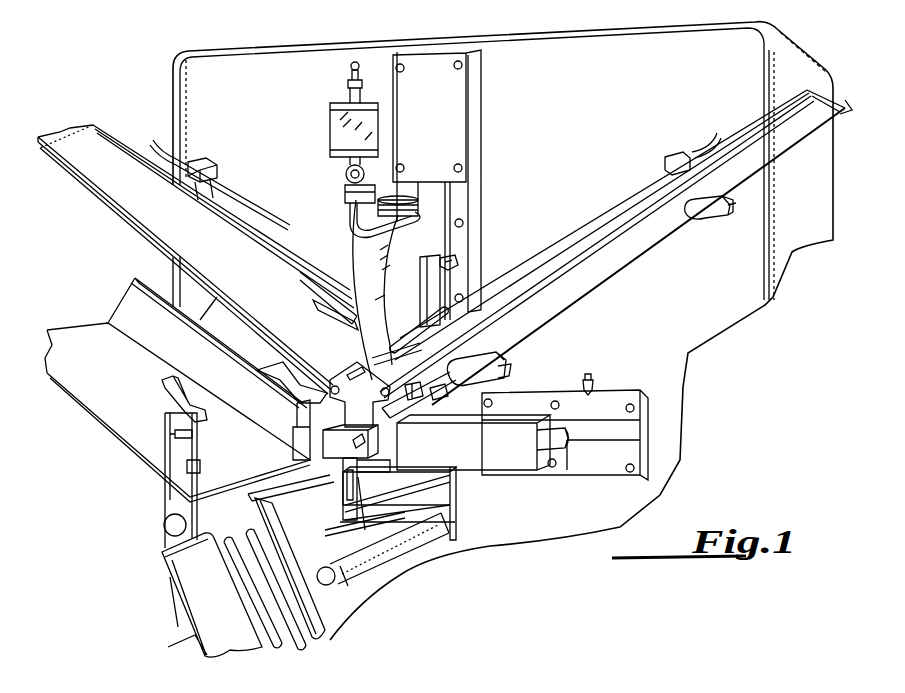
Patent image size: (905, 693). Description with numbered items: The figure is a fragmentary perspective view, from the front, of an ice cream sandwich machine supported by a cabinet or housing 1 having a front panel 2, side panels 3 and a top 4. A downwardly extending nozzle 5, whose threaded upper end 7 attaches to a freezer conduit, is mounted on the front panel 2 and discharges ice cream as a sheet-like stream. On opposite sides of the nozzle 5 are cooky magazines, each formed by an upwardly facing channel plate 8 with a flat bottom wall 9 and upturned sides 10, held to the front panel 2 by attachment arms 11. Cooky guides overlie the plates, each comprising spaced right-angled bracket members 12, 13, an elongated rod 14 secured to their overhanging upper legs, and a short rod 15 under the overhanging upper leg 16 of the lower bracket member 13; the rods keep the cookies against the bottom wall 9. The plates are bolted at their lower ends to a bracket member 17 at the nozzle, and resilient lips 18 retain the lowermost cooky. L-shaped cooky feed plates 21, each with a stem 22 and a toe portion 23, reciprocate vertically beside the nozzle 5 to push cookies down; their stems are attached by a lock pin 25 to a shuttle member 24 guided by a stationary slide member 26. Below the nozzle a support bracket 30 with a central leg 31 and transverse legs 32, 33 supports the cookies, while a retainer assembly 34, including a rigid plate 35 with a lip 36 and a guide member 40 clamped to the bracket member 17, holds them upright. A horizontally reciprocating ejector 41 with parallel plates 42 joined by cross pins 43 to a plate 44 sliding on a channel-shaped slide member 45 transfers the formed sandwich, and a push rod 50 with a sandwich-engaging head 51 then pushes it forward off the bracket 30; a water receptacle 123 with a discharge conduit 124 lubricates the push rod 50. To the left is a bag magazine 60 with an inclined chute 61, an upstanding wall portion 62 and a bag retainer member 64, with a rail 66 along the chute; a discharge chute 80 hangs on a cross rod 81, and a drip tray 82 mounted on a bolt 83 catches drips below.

The housing 1 is at (165, 72).
The front panel 2 is at (510, 60).
The side panels 3 is at (790, 80).
The top 4 is at (785, 60).
The nozzle 5 is at (382, 290).
The upper end 7 is at (386, 199).
The channel plate 8 is at (98, 200).
The bottom wall 9 is at (80, 130).
The upturned sides 10 is at (115, 140).
The attachment arms 11 is at (695, 215).
The bracket member 12 is at (212, 180).
The lower bracket member 13 is at (490, 305).
The elongated rod 14 is at (245, 218).
The short rod 15 is at (325, 317).
The overhanging upper leg 16 is at (350, 305).
The bracket member 17 is at (337, 375).
The lips 18 is at (433, 398).
The cooky feed plates 21 is at (398, 362).
The stem 22 is at (455, 263).
The toe portion 23 is at (450, 360).
The shuttle member 24 is at (440, 226).
The lock pin 25 is at (456, 250).
The slide member 26 is at (472, 166).
The support bracket 30 is at (460, 483).
The leg 31 is at (455, 503).
The leg 32 is at (367, 477).
The leg 33 is at (400, 515).
The retainer assembly 34 is at (358, 480).
The L-shaped rigid metal plate 35 is at (368, 372).
The lip 36 is at (360, 478).
The guide member 40 is at (343, 454).
The ejector 41 is at (527, 478).
The elongated plates 42 is at (548, 470).
The cross pins 43 is at (566, 450).
The plate 44 is at (622, 440).
The slide member 45 is at (610, 398).
The push rod 50 is at (337, 485).
The sandwich-engaging head 51 is at (293, 435).
The bag magazine 60 is at (105, 430).
The chute 61 is at (72, 330).
The wall portion 62 is at (200, 456).
The bag retainer member 64 is at (195, 405).
The rail 66 is at (140, 288).
The discharge chute 80 is at (195, 583).
The cross rod 81 is at (287, 497).
The drip tray 82 is at (327, 598).
The mounting bolt 83 is at (330, 590).
The water receptacle 123 is at (334, 133).
The discharge conduit 124 is at (345, 220).